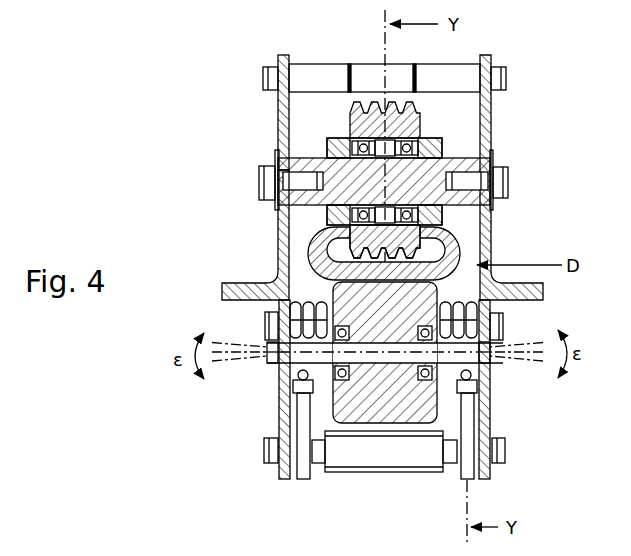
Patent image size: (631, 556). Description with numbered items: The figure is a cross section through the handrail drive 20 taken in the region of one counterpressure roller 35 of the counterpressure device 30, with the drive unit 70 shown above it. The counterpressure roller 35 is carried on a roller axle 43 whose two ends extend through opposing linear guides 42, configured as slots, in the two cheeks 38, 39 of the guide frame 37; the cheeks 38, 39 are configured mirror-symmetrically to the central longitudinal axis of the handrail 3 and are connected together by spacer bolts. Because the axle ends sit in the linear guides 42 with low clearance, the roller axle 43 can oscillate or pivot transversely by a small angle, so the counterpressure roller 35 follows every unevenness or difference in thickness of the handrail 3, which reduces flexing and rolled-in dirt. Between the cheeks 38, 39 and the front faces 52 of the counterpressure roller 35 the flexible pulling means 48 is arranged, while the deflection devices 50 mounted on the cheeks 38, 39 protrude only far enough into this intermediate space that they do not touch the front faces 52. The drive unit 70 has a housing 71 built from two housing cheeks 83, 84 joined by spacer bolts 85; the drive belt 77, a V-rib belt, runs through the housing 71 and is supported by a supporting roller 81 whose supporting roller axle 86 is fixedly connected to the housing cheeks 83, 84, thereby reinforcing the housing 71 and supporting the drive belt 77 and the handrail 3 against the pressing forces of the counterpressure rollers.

The handrail 3 is at (452, 245).
The handrail drive 20 is at (187, 187).
The counterpressure device 30 is at (247, 422).
The counterpressure roller 35 is at (411, 410).
The guide frame 37 is at (338, 476).
The cheek 38 is at (486, 392).
The cheek 39 is at (282, 388).
The linear guide 42 is at (278, 367).
The roller axle 43 is at (386, 358).
The flexible pulling means 48 is at (303, 415).
The deflection device 50 is at (278, 303).
The front face 52 is at (327, 419).
The drive unit 70 is at (541, 209).
The housing 71 is at (276, 251).
The drive belt 77 is at (420, 103).
The supporting roller 81 is at (420, 124).
The housing cheek 83 is at (472, 143).
The housing cheek 84 is at (278, 125).
The spacer bolt 85 is at (318, 66).
The supporting roller axle 86 is at (465, 163).